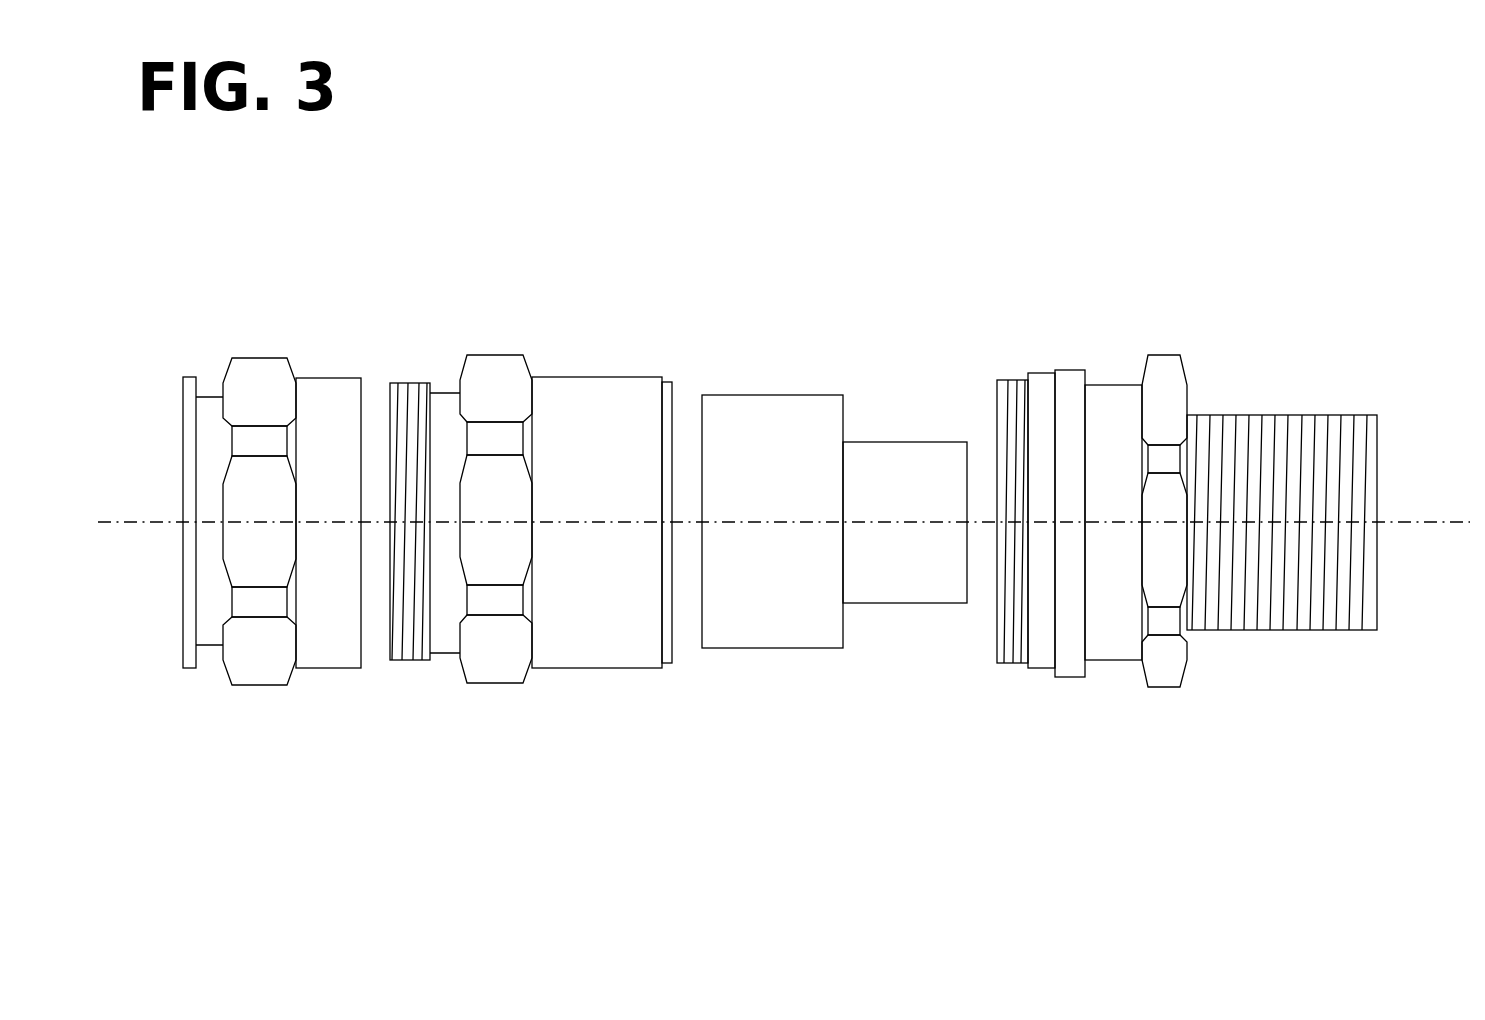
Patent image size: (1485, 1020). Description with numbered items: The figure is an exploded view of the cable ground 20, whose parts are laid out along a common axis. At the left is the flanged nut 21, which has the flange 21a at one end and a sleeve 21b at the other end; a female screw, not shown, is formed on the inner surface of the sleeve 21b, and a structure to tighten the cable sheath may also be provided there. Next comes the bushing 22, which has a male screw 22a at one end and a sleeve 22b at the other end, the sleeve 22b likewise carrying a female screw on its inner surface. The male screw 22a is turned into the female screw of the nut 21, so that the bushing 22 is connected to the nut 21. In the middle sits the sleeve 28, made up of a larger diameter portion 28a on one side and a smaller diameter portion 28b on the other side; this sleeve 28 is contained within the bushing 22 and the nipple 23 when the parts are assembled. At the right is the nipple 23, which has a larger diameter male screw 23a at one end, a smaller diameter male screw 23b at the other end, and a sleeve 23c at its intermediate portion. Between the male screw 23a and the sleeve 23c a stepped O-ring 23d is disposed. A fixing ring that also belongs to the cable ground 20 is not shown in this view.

The cable ground 20 is at (708, 236).
The flanged nut 21 is at (260, 352).
The flange 21a is at (192, 375).
The sleeve 21b is at (340, 377).
The bushing 22 is at (488, 349).
The male screw 22a is at (407, 384).
The sleeve 22b is at (598, 388).
The sleeve 28 is at (790, 387).
The larger diameter portion 28a is at (743, 422).
The smaller diameter portion 28b is at (900, 447).
The nipple 23 is at (1103, 377).
The larger diameter male screw 23a is at (1015, 397).
The smaller diameter male screw 23b is at (1257, 423).
The sleeve 23c is at (1125, 393).
The stepped O-ring 23d is at (1053, 373).